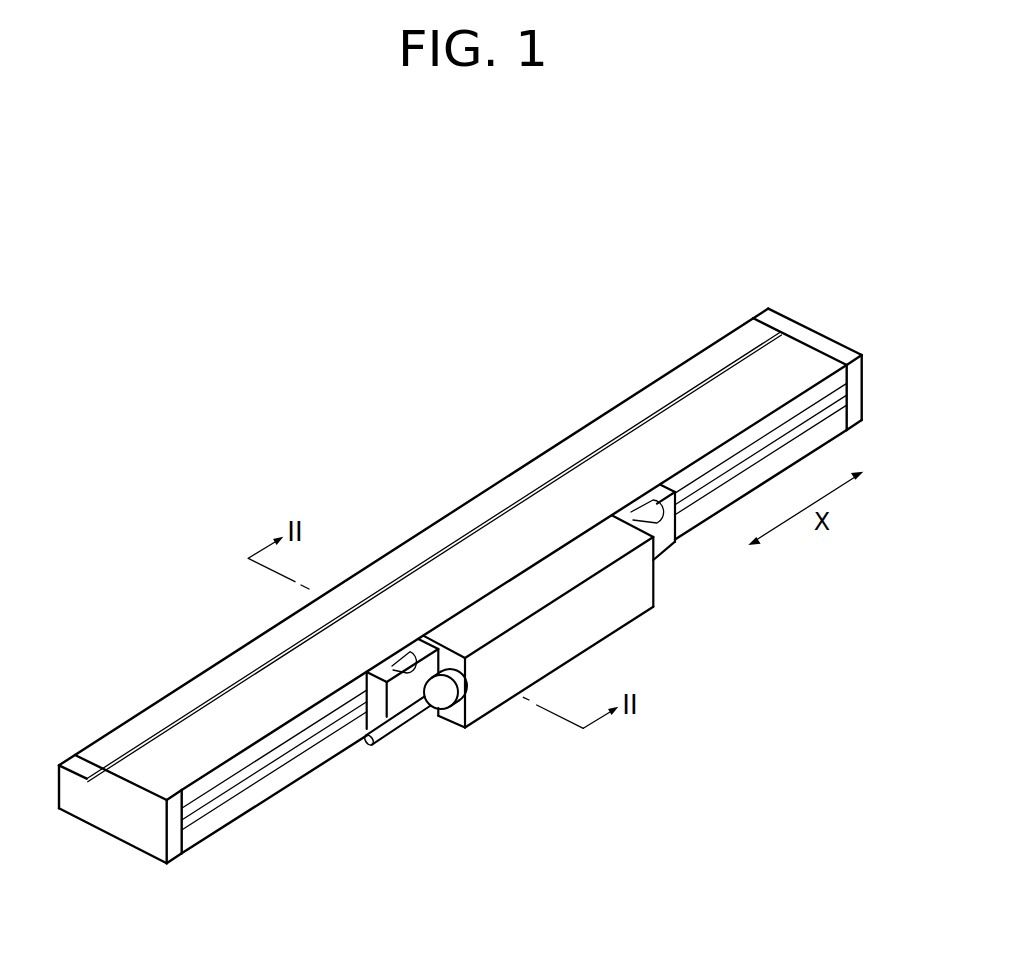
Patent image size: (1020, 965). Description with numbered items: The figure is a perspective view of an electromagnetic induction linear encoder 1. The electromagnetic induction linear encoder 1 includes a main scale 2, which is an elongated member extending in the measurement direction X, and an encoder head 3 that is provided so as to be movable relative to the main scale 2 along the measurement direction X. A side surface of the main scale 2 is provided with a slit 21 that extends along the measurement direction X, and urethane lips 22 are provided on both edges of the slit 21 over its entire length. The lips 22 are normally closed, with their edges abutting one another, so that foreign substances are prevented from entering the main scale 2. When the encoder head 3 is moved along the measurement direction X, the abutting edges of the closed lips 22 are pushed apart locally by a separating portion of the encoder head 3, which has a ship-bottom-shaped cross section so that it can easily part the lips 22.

The electromagnetic induction linear encoder 1 is at (460, 603).
The main scale 2 is at (185, 698).
The encoder head 3 is at (590, 622).
The slit 21 is at (281, 770).
The lips 22 is at (207, 802).